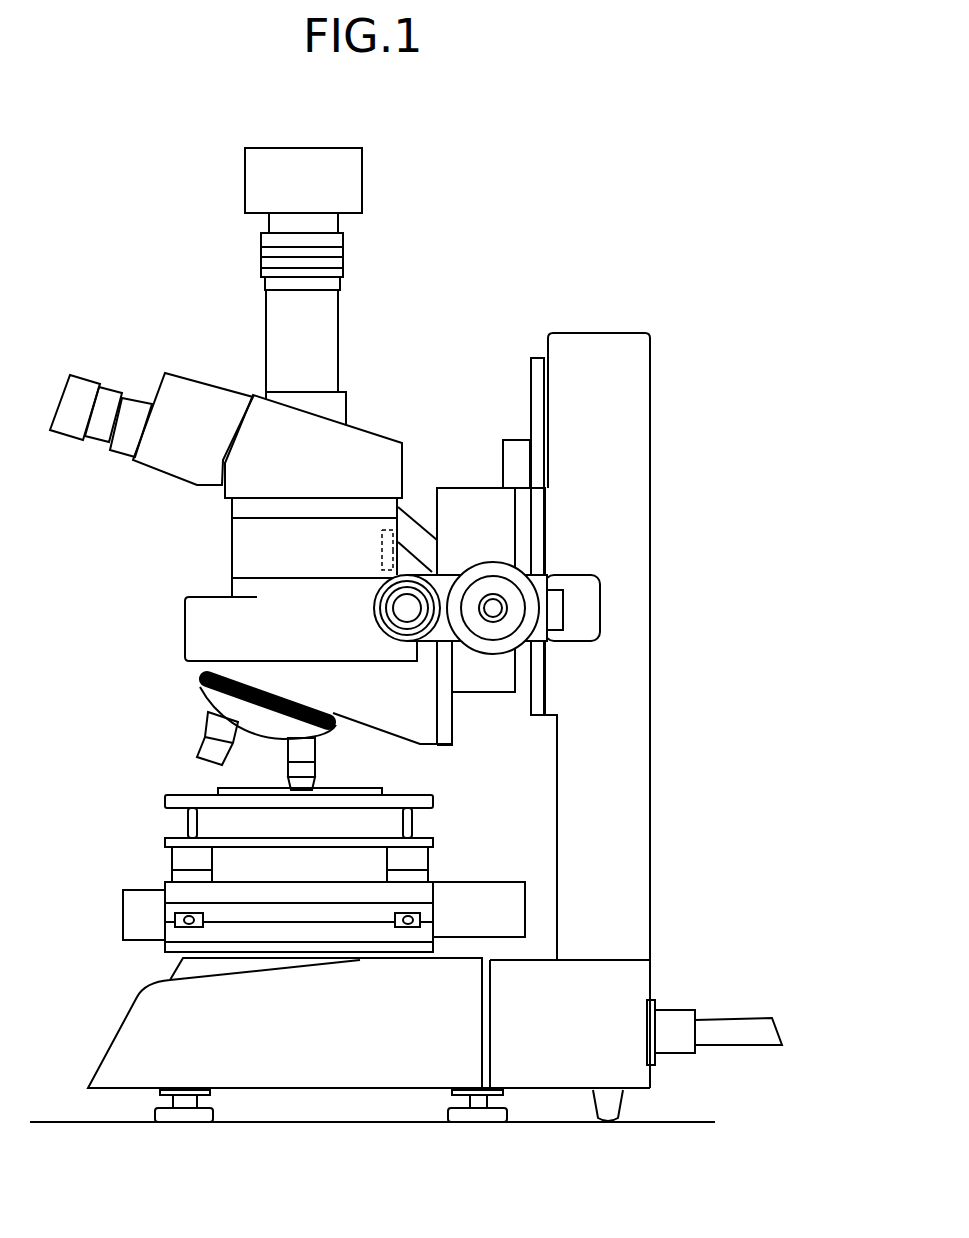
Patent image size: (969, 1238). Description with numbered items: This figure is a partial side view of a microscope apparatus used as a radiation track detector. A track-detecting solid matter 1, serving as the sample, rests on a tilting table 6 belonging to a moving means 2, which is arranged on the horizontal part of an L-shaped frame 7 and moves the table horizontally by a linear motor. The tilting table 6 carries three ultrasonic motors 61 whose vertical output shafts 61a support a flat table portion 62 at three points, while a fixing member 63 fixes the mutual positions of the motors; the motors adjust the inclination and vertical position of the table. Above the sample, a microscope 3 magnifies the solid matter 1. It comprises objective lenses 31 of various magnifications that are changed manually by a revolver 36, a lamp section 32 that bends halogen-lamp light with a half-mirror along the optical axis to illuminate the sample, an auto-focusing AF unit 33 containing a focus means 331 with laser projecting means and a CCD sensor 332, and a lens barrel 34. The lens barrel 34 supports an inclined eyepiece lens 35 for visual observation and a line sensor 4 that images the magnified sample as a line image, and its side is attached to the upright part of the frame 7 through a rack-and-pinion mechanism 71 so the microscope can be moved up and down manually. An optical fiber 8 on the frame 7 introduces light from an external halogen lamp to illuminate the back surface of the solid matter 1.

The track-detecting solid matter 1 is at (230, 787).
The moving means 2 is at (126, 945).
The microscope 3 is at (156, 489).
The line sensor 4 is at (245, 180).
The tilting table 6 is at (122, 880).
The frame 7 is at (620, 613).
The optical fiber 8 is at (737, 1020).
The objective lenses 31 is at (205, 728).
The lamp section 32 is at (212, 642).
The auto-focusing AF unit 33 is at (232, 565).
The lens barrel 34 is at (263, 425).
The eyepiece lens 35 is at (141, 395).
The revolver 36 is at (197, 676).
The ultrasonic motors 61 is at (170, 863).
The vertical output shafts 61a is at (183, 822).
The flat table portion 62 is at (163, 800).
The fixing member 63 is at (167, 847).
The rack-and-pinion mechanism 71 is at (532, 537).
The focus means 331 is at (382, 533).
The optical element 332 is at (382, 547).